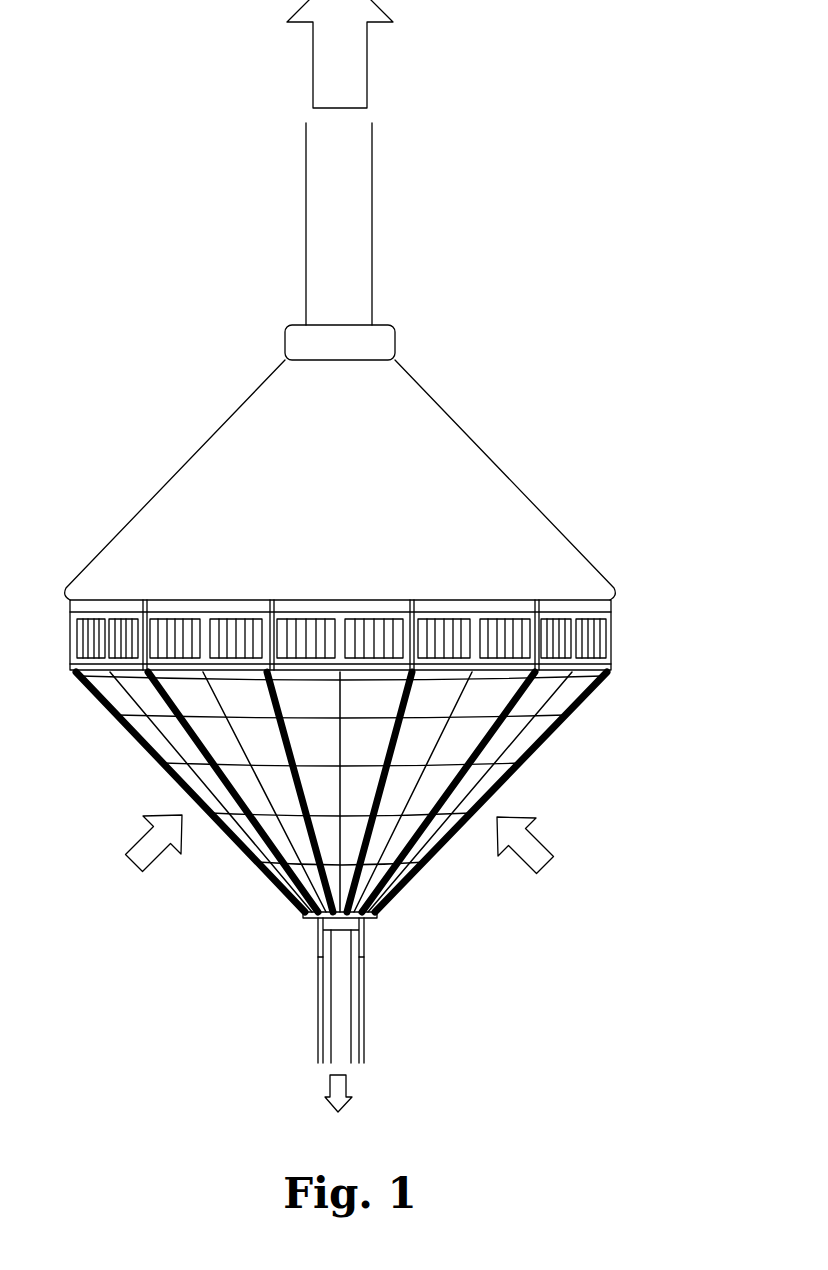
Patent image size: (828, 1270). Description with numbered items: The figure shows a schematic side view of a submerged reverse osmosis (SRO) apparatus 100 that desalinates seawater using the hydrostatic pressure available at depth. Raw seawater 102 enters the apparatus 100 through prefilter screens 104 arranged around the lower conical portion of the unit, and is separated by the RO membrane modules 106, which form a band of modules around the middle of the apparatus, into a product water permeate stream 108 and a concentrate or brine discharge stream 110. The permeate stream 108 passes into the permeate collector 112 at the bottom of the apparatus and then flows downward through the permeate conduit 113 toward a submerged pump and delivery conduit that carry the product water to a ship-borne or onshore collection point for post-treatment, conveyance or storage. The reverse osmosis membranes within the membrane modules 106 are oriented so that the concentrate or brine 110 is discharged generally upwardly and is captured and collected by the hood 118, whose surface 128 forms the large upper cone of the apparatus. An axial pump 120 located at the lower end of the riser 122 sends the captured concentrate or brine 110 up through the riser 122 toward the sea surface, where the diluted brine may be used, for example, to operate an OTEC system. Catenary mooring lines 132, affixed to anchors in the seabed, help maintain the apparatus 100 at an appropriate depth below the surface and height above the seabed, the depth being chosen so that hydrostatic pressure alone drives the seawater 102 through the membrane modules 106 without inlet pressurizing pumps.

The SRO apparatus 100 is at (605, 330).
The raw seawater 102 is at (133, 866).
The prefilter screens 104 is at (533, 740).
The RO membrane modules 106 is at (597, 668).
The product water permeate stream 108 is at (345, 1105).
The concentrate or brine discharge stream 110 is at (352, 96).
The permeate collector 112 is at (330, 923).
The permeate conduit 113 is at (340, 1000).
The hood 118 is at (183, 458).
The axial pump 120 is at (385, 345).
The riser 122 is at (363, 258).
The hood surface 128 is at (505, 497).
The catenary mooring lines 132 is at (360, 950).